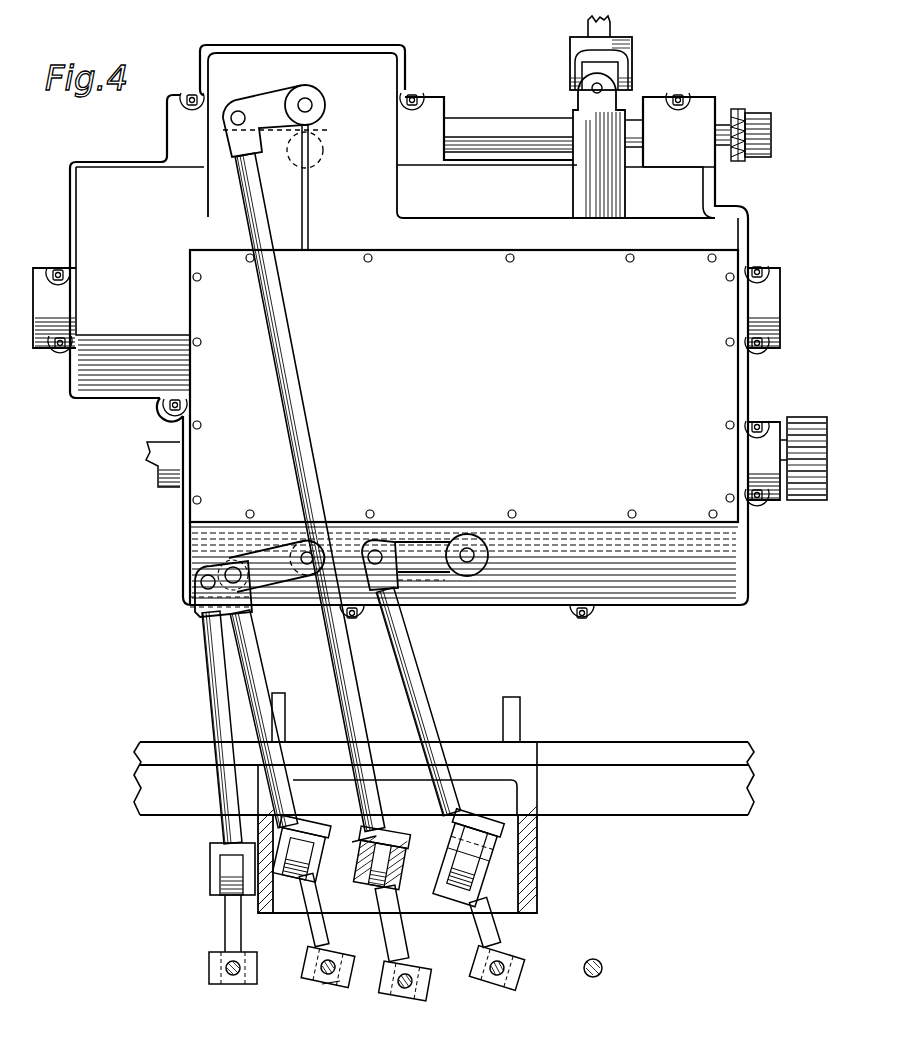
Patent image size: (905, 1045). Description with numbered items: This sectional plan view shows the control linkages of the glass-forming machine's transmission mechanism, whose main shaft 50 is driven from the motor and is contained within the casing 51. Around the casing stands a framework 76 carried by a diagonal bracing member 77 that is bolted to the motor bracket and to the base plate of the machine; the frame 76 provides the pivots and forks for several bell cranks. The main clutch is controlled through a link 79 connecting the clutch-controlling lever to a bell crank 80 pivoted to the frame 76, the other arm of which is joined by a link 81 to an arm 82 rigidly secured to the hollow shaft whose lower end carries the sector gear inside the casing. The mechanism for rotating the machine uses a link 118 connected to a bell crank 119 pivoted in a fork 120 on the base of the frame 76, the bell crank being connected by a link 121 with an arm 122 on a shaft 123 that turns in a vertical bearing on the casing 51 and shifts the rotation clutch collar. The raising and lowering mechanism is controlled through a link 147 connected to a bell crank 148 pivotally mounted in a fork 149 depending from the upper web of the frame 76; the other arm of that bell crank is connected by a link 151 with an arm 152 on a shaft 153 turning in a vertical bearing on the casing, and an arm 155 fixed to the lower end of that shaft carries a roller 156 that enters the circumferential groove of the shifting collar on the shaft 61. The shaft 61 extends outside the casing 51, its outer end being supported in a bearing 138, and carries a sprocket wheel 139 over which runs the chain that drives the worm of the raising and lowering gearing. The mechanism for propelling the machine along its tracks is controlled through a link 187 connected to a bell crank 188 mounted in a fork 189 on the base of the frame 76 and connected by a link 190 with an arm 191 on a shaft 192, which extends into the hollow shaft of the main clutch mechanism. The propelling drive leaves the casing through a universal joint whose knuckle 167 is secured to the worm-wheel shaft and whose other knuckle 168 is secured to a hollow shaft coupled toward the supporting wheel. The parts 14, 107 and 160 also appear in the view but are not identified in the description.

The slide block 14 is at (378, 906).
The main shaft 50 is at (167, 453).
The casing 51 is at (697, 582).
The shaft 61 is at (482, 127).
The framework 76 is at (525, 843).
The diagonal bracing member 77 is at (632, 772).
The link 79 is at (226, 968).
The bell crank 80 is at (232, 930).
The link 81 is at (222, 662).
The arm 82 is at (197, 563).
The knob 107 is at (800, 417).
The link 118 is at (505, 970).
The bell crank 119 is at (492, 928).
The fork 120 is at (495, 882).
The link 121 is at (417, 672).
The arm 122 is at (423, 552).
The shaft 123 is at (467, 555).
The bearing 138 is at (695, 117).
The sprocket wheel 139 is at (763, 127).
The link 147 is at (408, 1002).
The bell crank 148 is at (322, 892).
The fork 149 is at (360, 853).
The link 151 is at (300, 377).
The arm 152 is at (263, 105).
The shaft 153 is at (307, 105).
The arm 155 is at (327, 130).
The roller 156 is at (323, 150).
The plunger 160 is at (590, 192).
The knuckle 167 is at (622, 105).
The knuckle 168 is at (572, 62).
The link 187 is at (333, 985).
The bell crank 188 is at (317, 932).
The fork 189 is at (305, 905).
The link 190 is at (264, 685).
The arm 191 is at (267, 556).
The shaft 192 is at (309, 556).